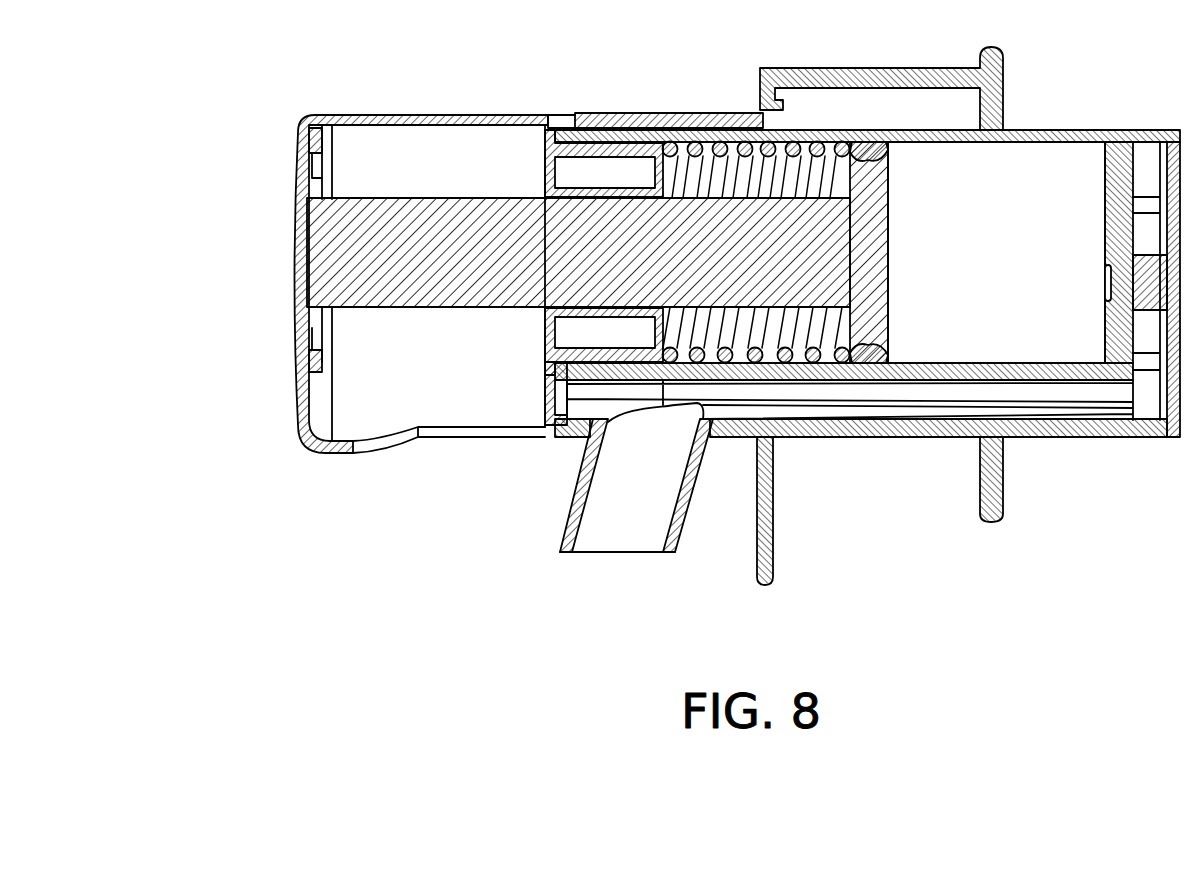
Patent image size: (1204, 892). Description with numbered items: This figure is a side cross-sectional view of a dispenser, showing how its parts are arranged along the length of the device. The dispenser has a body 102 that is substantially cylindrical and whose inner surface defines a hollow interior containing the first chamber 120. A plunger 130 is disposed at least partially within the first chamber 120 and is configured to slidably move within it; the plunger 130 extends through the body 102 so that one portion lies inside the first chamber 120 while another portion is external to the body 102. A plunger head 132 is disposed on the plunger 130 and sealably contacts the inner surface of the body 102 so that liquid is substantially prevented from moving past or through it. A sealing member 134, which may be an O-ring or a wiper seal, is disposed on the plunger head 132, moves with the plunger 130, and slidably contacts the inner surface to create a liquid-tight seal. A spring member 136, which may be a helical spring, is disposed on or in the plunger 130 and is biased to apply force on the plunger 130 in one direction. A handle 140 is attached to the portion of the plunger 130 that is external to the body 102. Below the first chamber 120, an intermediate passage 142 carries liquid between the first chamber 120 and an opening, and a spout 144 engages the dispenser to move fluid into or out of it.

The body 102 is at (813, 440).
The first chamber 120 is at (1022, 175).
The plunger 130 is at (370, 234).
The plunger head 132 is at (875, 272).
The sealing member 134 is at (875, 155).
The spring member 136 is at (722, 146).
The handle 140 is at (402, 116).
The intermediate passage 142 is at (1085, 405).
The spout 144 is at (625, 530).